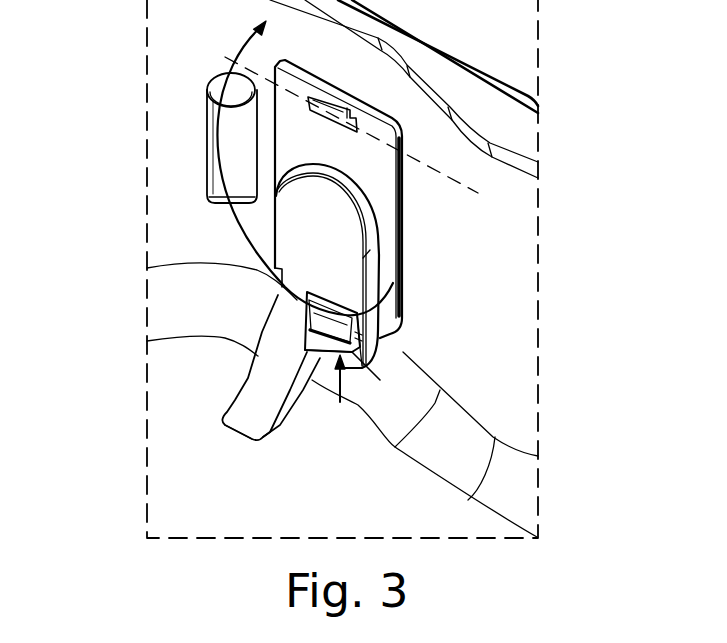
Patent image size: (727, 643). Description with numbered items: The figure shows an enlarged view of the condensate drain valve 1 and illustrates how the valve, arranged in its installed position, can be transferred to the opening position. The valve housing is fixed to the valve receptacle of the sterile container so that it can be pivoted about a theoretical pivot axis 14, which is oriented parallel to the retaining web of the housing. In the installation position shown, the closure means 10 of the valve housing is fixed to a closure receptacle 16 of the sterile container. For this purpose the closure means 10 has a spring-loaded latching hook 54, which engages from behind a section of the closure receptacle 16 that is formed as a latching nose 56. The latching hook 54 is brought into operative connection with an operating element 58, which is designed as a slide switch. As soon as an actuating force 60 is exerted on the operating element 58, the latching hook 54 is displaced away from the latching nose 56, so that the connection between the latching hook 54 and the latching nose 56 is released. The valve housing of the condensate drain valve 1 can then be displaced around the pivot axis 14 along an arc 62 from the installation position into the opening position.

The condensate drain valve 1 is at (418, 227).
The pivot axis 14 is at (465, 172).
The arc 62 is at (238, 222).
The operating element 58 is at (305, 297).
The actuating force 60 is at (338, 390).
The closure receptacle 16 is at (422, 346).
The latching nose 56 is at (400, 338).
The closure means 10 is at (342, 400).
The latching hook 54 is at (385, 375).